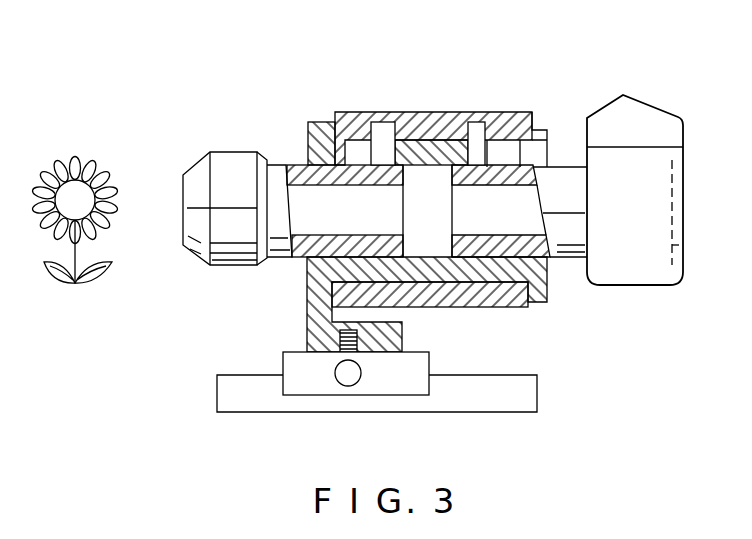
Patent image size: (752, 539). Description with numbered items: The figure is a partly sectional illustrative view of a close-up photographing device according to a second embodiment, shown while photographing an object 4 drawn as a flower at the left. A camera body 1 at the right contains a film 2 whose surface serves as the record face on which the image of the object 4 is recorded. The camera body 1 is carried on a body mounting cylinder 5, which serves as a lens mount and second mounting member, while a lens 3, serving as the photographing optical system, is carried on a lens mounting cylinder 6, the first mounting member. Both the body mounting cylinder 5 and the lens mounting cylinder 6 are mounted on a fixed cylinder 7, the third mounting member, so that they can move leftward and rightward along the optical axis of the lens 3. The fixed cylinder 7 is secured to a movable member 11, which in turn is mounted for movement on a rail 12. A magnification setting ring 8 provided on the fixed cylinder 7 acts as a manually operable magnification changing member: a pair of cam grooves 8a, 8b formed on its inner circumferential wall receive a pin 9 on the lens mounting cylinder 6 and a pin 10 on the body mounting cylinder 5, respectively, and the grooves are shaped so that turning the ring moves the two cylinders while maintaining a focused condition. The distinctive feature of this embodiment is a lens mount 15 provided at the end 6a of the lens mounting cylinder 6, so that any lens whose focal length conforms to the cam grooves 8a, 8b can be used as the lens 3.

The camera body 1 is at (648, 118).
The film 2 is at (683, 245).
The lens 3 is at (221, 165).
The object 4 is at (92, 172).
The body mounting cylinder 5 is at (565, 178).
The lens mounting cylinder 6 is at (299, 165).
The end of lens mounting cylinder 6a is at (273, 228).
The fixed cylinder 7 is at (308, 320).
The magnification setting ring 8 is at (448, 113).
The cam groove 8a is at (388, 93).
The cam groove 8b is at (506, 93).
The pin 9 is at (382, 135).
The pin 10 is at (480, 135).
The movable member 11 is at (374, 388).
The rail 12 is at (481, 405).
The lens mount 15 is at (262, 162).